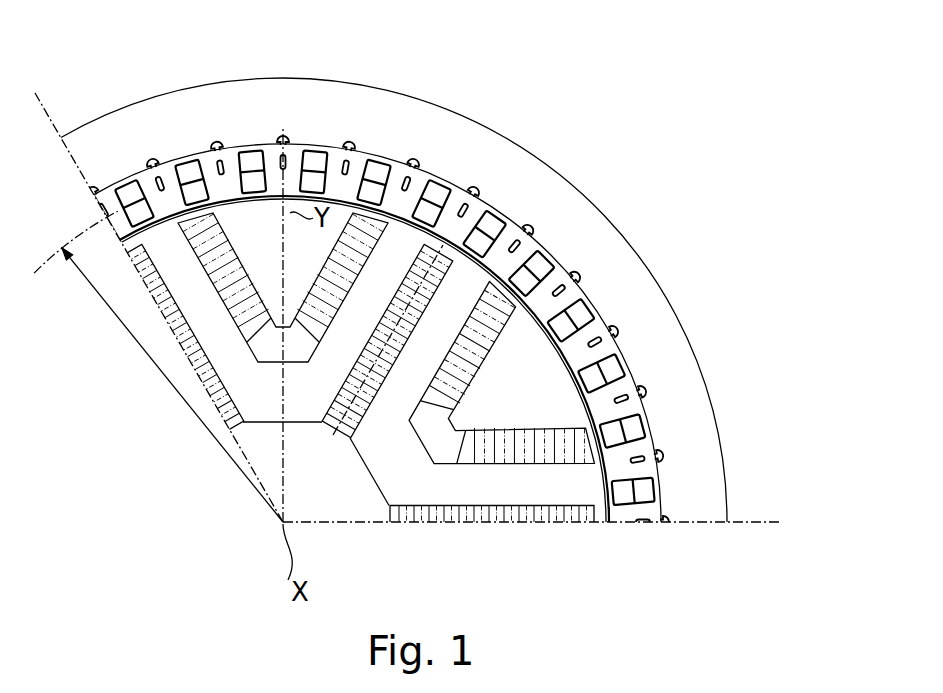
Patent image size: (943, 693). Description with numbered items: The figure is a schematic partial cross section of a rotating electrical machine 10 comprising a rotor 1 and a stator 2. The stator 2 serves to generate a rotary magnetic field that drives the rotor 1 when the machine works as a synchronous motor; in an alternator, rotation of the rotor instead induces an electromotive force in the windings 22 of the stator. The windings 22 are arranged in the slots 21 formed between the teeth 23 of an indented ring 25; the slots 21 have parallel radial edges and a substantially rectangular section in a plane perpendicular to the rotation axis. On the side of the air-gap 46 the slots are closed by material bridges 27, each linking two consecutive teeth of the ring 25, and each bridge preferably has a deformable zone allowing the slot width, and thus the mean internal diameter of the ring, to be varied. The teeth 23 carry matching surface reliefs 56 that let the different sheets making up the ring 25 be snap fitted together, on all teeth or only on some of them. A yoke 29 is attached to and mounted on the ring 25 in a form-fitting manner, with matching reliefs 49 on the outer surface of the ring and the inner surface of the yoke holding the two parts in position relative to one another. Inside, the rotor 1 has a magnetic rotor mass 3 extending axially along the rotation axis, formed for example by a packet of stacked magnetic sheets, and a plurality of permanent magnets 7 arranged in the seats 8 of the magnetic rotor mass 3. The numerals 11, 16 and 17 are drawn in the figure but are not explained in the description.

The rotor 1 is at (359, 403).
The stator 2 is at (524, 93).
The magnetic rotor mass 3 is at (262, 478).
The permanent magnets 7 is at (531, 458).
The seats 8 is at (286, 363).
The rotating electrical machine 10 is at (436, 329).
The rotor laminated core 11 is at (229, 235).
The reference circle 16 is at (137, 241).
The pole segment 17 is at (513, 351).
The slots 21 is at (501, 208).
The windings 22 is at (541, 260).
The teeth 23 is at (596, 326).
The indented ring 25 is at (667, 525).
The material bridges 27 is at (238, 192).
The yoke 29 is at (686, 486).
The air-gap 46 is at (607, 489).
The matching reliefs 49 is at (351, 140).
The matching surface reliefs 56 is at (648, 381).